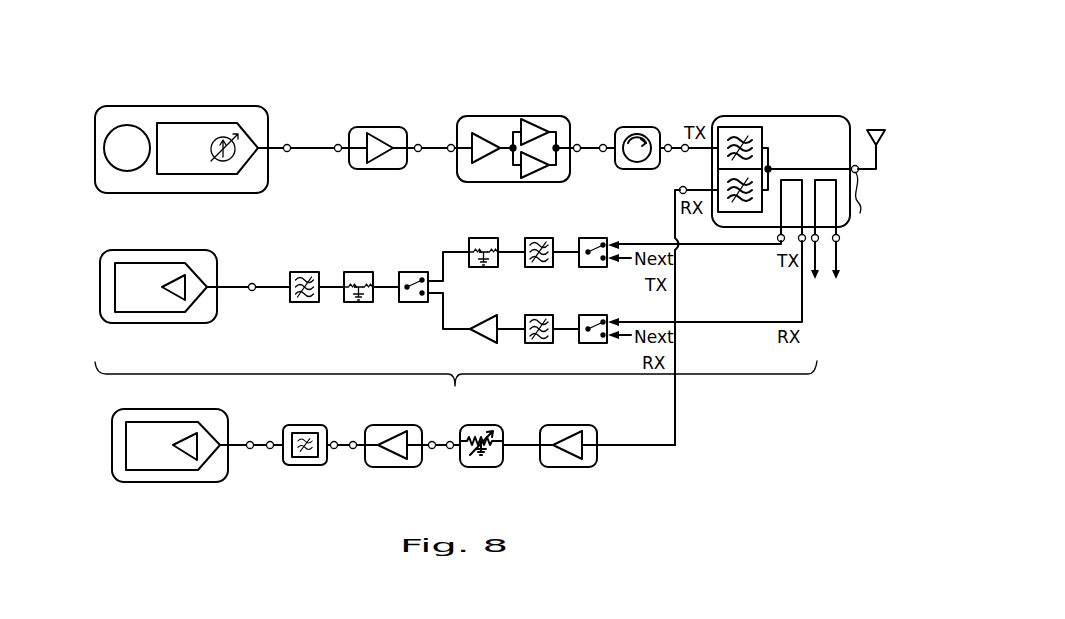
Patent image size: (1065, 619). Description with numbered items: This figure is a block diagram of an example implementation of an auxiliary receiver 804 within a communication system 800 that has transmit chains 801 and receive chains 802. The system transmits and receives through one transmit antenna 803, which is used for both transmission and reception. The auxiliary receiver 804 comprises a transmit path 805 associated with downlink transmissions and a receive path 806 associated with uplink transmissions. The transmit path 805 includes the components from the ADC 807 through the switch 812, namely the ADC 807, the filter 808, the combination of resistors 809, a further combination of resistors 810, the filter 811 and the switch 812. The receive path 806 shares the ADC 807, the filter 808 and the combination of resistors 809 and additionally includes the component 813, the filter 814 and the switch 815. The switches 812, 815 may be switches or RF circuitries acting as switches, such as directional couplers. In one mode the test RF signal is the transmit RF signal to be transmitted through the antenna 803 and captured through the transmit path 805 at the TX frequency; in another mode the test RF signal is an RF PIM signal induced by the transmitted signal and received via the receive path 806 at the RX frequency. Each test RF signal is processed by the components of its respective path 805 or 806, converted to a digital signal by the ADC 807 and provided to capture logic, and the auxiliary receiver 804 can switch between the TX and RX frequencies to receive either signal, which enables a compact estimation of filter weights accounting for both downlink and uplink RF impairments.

The communication system 800 is at (741, 98).
The transmit chains 801 is at (84, 102).
The receive chains 802 is at (94, 407).
The transmit antenna 803 is at (876, 126).
The auxiliary receiver 804 is at (456, 333).
The transmit path 805 is at (686, 285).
The receive path 806 is at (686, 348).
The ADC 807 is at (153, 248).
The filter 808 is at (303, 272).
The combination of resistors 809 is at (358, 272).
The combination of resistors 810 is at (485, 238).
The filter 811 is at (539, 238).
The switch 812 is at (592, 238).
The component 813 is at (484, 313).
The filter 814 is at (540, 313).
The switch 815 is at (593, 313).